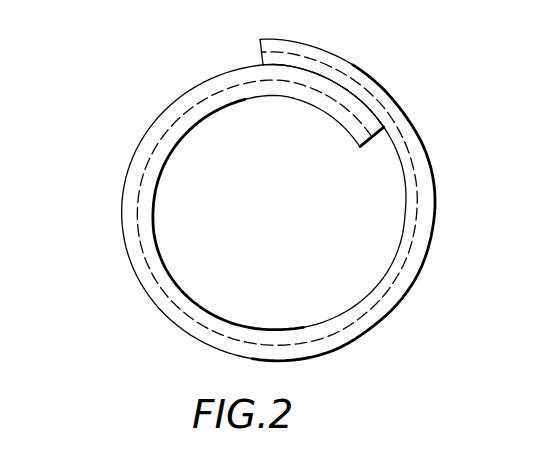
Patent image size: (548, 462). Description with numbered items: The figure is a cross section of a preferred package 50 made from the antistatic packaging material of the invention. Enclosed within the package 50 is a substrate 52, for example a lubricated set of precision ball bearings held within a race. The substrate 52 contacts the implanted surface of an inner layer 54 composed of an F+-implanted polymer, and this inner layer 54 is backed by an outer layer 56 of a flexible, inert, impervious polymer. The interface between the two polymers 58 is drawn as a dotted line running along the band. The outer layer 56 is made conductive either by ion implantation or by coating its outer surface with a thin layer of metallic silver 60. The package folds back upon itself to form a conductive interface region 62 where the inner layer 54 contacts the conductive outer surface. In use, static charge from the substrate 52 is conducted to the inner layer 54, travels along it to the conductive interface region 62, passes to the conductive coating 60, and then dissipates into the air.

The package 50 is at (261, 193).
The substrate 52 is at (280, 220).
The inner layer 54 is at (405, 150).
The outer layer 56 is at (420, 252).
The interface between the two polymers 58 is at (353, 314).
The thin layer of metallic silver 60 is at (354, 63).
The conductive interface region 62 is at (261, 62).